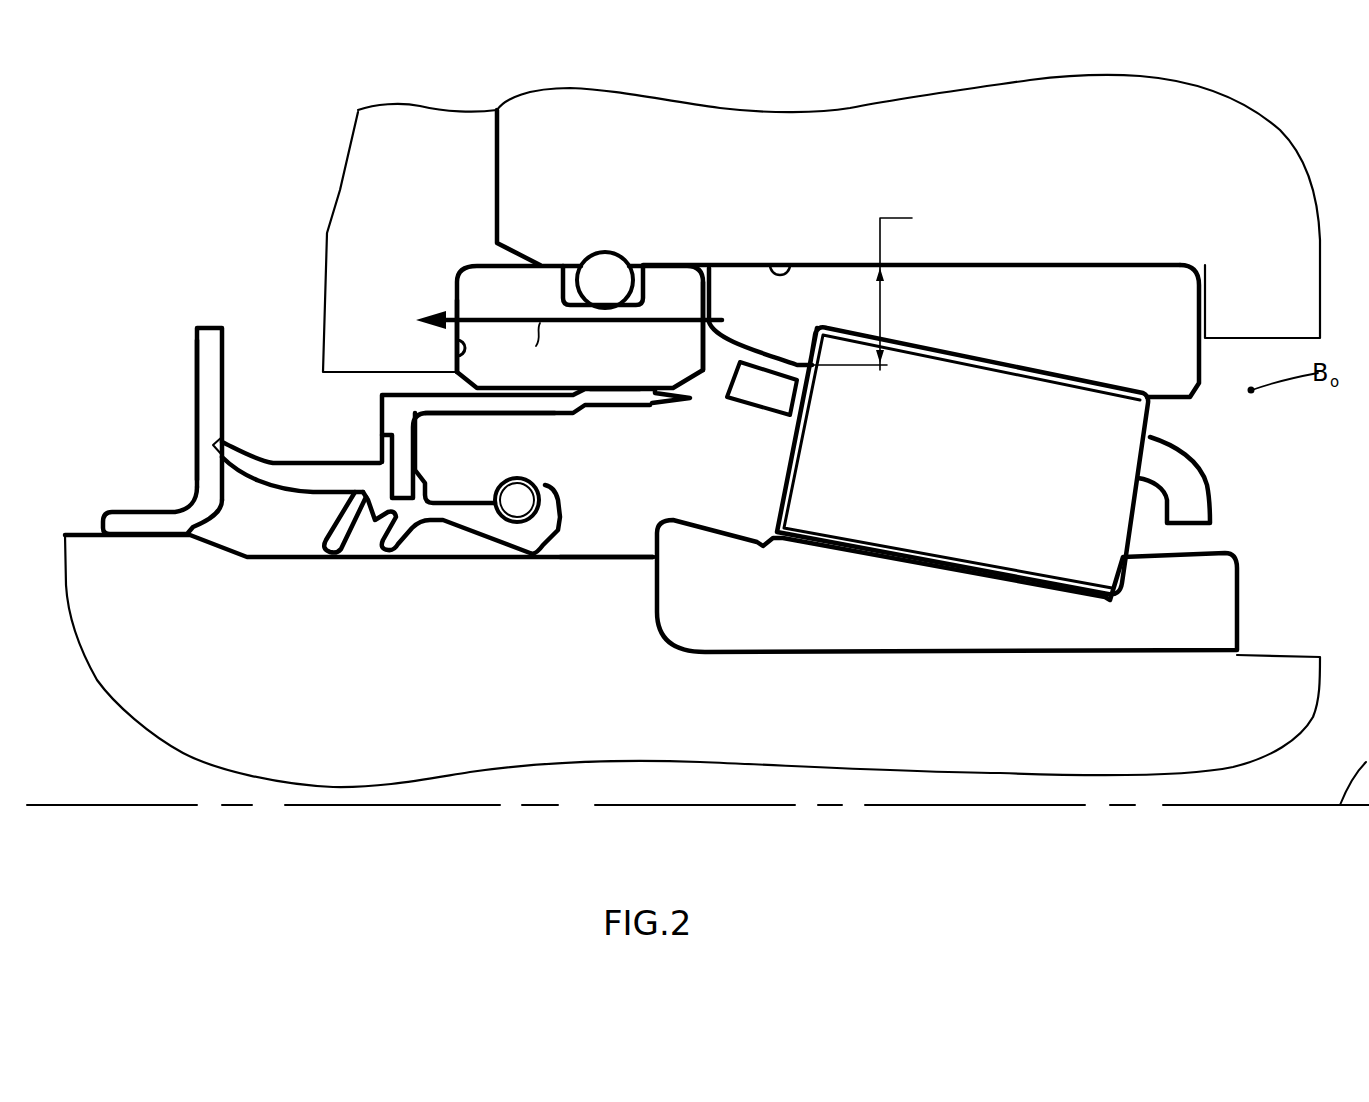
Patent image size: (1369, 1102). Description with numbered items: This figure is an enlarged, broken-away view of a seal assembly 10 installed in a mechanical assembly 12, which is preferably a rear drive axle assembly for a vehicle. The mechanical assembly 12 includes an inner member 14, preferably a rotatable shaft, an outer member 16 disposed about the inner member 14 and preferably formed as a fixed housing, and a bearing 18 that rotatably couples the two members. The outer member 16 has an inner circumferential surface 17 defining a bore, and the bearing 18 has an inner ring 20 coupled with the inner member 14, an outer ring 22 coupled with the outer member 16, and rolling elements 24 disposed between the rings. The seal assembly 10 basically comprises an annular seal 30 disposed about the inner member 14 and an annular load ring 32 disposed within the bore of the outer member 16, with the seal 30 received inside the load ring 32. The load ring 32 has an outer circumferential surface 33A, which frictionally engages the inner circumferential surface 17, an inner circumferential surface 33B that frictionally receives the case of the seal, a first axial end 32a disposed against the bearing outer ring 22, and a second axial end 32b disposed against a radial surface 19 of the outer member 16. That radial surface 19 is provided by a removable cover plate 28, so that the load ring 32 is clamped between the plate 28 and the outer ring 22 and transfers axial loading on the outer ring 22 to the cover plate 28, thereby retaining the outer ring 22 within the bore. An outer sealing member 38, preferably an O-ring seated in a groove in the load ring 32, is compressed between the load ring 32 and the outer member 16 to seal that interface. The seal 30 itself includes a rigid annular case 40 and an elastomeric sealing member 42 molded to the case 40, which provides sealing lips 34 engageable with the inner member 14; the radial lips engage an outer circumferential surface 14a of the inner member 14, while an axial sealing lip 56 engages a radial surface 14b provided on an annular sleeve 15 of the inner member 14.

The seal assembly 10 is at (413, 632).
The mechanical assembly 12 is at (200, 152).
The inner member 14 is at (148, 714).
The outer circumferential surface of the inner member 14a is at (610, 555).
The radial surface of the inner member 14b is at (224, 372).
The annular sleeve 15 is at (207, 385).
The outer member 16 is at (893, 103).
The inner circumferential surface of the outer member 17 is at (802, 260).
The bearing 18 is at (1019, 238).
The radial surface of the outer member 19 is at (455, 352).
The inner ring 20 is at (965, 652).
The outer ring 22 is at (1085, 283).
The rolling elements 24 is at (1113, 437).
The cover plate 28 is at (338, 232).
The annular seal 30 is at (340, 570).
The load ring 32 is at (690, 233).
The first axial end of the load ring 32a is at (708, 297).
The second axial end of the load ring 32b is at (458, 293).
The outer circumferential surface of the load ring 33A is at (547, 265).
The inner circumferential surface of the load ring 33B is at (612, 390).
The sealing lips 34 is at (562, 503).
The outer sealing member 38 is at (606, 258).
The rigid annular case 40 is at (642, 410).
The annular elastomeric sealing member 42 is at (472, 493).
The axial sealing lip 56 is at (303, 470).